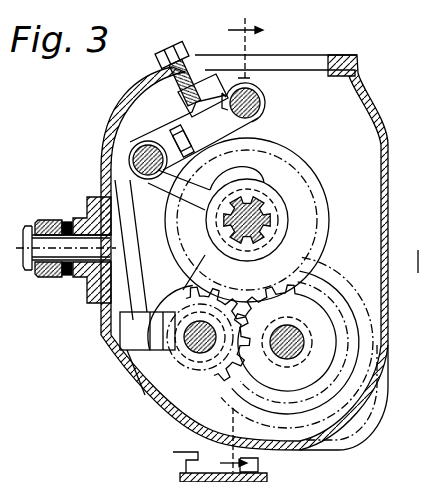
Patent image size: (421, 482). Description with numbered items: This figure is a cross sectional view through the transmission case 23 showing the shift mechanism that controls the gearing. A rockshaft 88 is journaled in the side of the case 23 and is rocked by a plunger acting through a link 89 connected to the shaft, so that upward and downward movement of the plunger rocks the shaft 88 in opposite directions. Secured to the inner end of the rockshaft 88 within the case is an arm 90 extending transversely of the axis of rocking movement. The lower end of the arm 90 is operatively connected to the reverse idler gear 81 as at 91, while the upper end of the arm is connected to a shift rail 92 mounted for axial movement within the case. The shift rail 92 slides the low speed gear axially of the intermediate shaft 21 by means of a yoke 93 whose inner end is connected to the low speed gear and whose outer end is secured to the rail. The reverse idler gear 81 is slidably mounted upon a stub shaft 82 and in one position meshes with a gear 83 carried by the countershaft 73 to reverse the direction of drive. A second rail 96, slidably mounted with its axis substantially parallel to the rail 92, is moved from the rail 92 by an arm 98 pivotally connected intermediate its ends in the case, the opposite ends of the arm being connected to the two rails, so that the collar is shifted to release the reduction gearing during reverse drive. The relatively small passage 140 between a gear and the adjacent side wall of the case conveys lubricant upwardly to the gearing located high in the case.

The intermediate shaft 21 is at (260, 213).
The case 23 is at (147, 400).
The countershaft 73 is at (303, 333).
The reverse idler gear 81 is at (182, 283).
The stub shaft 82 is at (195, 345).
The gear 83 is at (283, 312).
The rockshaft 88 is at (62, 270).
The link 89 is at (53, 222).
The arm 90 is at (122, 247).
The connection of arm to reverse gear 91 is at (150, 350).
The shift rail 92 is at (198, 168).
The yoke 93 is at (205, 147).
The second rail 96 is at (255, 95).
The arm 98 is at (233, 85).
The passage 140 is at (417, 273).